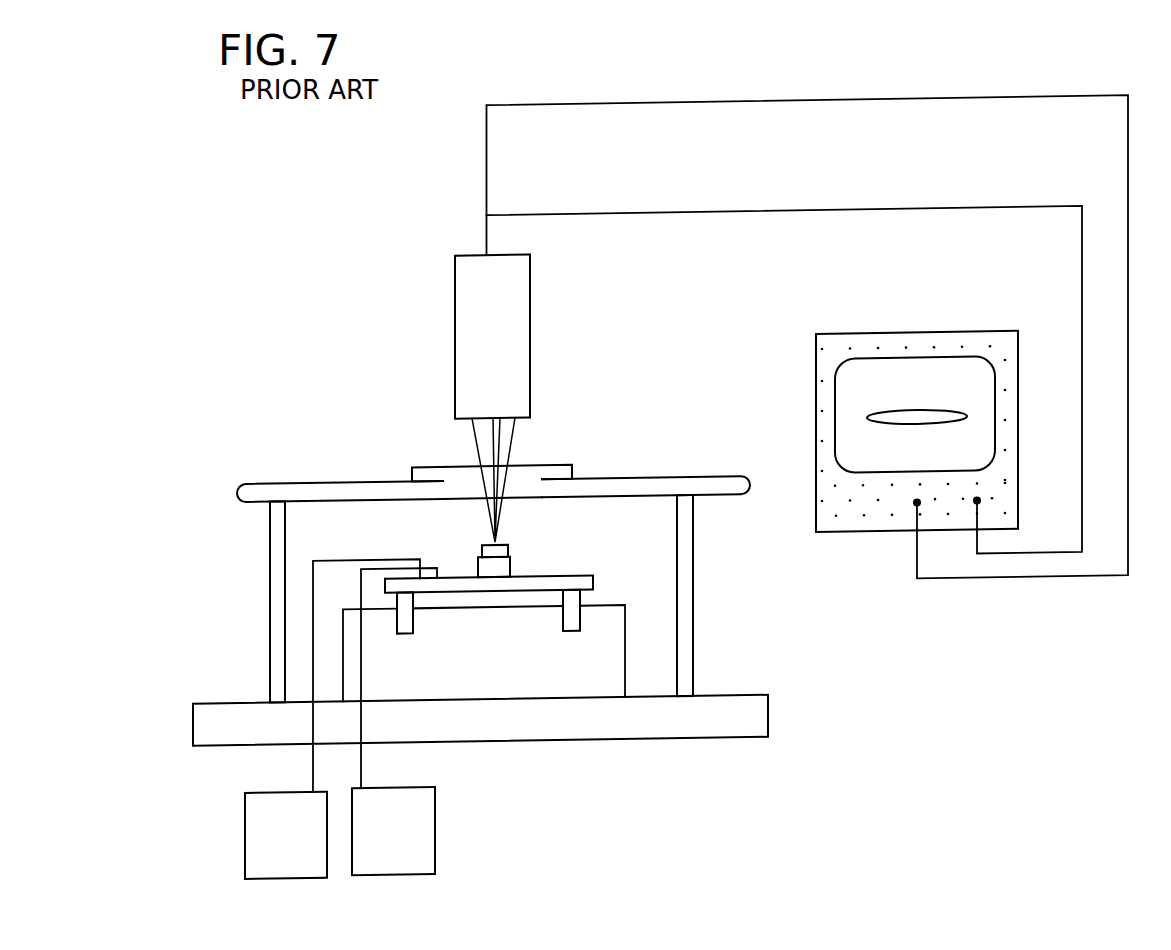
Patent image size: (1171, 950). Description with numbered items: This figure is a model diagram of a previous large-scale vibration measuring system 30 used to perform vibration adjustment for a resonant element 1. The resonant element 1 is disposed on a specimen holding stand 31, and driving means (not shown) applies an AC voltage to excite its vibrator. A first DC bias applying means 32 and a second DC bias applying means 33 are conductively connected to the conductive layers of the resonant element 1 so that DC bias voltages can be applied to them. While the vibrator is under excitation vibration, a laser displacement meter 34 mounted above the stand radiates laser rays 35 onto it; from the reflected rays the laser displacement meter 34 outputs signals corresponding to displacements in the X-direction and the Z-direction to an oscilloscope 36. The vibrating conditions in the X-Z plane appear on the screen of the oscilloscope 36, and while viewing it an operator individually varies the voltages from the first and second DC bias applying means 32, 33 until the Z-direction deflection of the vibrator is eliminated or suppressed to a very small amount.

The vibration measuring system 30 is at (333, 262).
The laser displacement meter 34 is at (503, 348).
The laser rays 35 is at (517, 442).
The resonant element 1 is at (507, 545).
The specimen holding stand 31 is at (502, 567).
The first DC bias applying means 32 is at (245, 844).
The second DC bias applying means 33 is at (435, 834).
The oscilloscope 36 is at (898, 346).